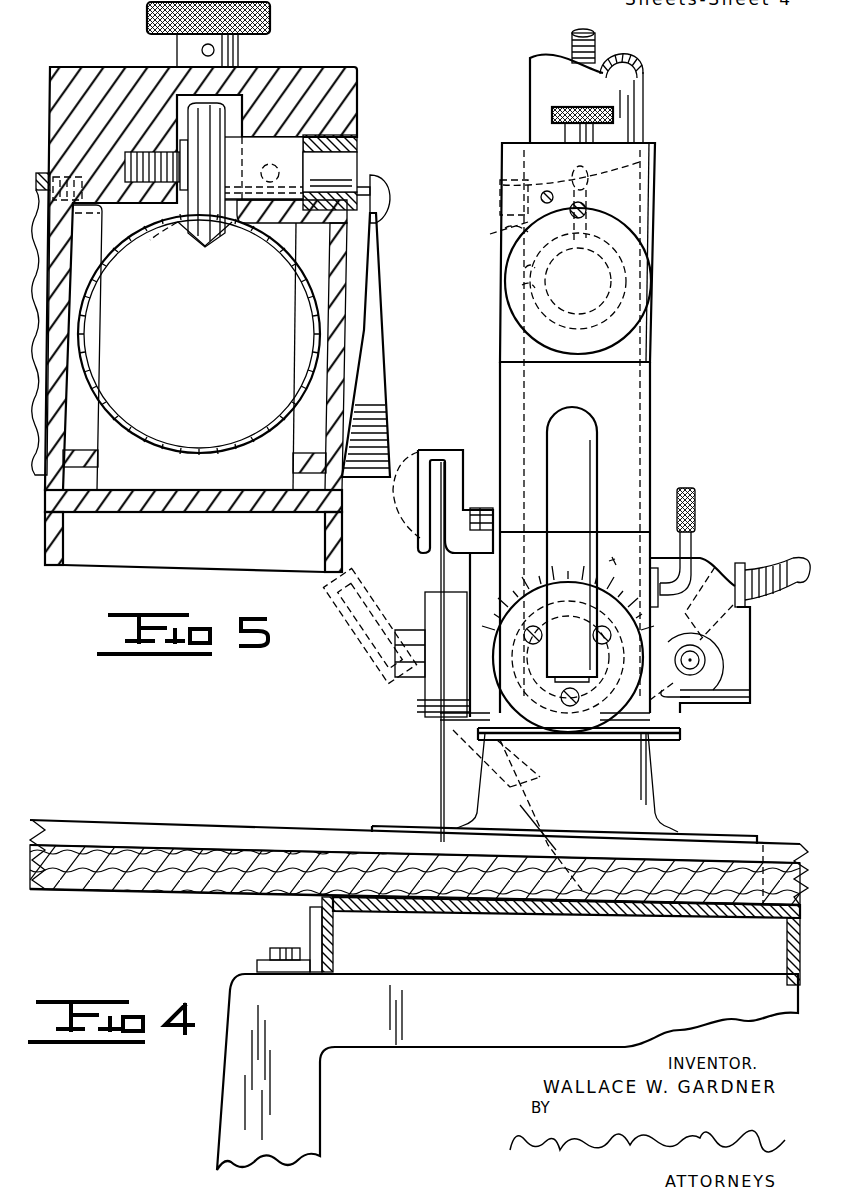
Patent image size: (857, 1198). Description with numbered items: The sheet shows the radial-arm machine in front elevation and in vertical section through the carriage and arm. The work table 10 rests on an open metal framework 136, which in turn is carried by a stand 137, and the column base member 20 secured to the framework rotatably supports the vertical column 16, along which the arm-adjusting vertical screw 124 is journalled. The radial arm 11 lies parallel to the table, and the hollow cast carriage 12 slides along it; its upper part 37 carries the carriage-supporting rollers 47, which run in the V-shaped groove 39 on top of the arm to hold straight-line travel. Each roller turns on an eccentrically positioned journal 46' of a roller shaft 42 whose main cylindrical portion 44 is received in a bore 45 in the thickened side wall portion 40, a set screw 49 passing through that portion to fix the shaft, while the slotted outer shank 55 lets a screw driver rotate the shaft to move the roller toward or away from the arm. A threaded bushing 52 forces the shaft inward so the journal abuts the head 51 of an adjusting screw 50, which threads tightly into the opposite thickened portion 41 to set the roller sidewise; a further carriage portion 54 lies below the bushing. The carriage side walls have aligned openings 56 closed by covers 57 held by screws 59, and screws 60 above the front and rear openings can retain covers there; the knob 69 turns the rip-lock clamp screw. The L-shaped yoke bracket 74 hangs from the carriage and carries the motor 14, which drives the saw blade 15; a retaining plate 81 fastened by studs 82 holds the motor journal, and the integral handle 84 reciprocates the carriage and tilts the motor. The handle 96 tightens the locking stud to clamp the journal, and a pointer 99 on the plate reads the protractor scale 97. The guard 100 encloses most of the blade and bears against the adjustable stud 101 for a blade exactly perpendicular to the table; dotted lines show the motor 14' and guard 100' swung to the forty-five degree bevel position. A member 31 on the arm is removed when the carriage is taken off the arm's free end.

In FIG. 4, the work table 10 is at (266, 818).
In FIG. 5, the radial arm 11 is at (222, 450).
In FIG. 4, the radial arm 11 is at (648, 305).
In FIG. 5, the carriage 12 is at (364, 119).
In FIG. 4, the carriage 12 is at (662, 210).
In FIG. 4, the motor 14 is at (700, 657).
In FIG. 4, the handle 14' is at (677, 527).
In FIG. 4, the saw blade 15 is at (438, 798).
In FIG. 4, the vertical column 16 is at (646, 105).
In FIG. 4, the column base member 20 is at (660, 807).
In FIG. 4, the member 31 is at (560, 300).
In FIG. 5, the upper part of the carriage 37 is at (348, 260).
In FIG. 4, the upper part of the carriage 37 is at (652, 248).
In FIG. 5, the V-shaped groove 39 is at (203, 247).
In FIG. 4, the V-shaped groove 39 is at (578, 281).
In FIG. 5, the thickened side wall portion 40 is at (284, 104).
In FIG. 5, the thickened side wall portion 41 is at (116, 70).
In FIG. 5, the roller shaft 42 is at (233, 210).
In FIG. 4, the roller shaft 42 is at (503, 238).
In FIG. 5, the main cylindrical portion of the roller shaft 44 is at (254, 150).
In FIG. 5, the bore 45 is at (301, 148).
In FIG. 5, the notch 46' is at (159, 246).
In FIG. 5, the carriage-supporting roller 47 is at (190, 240).
In FIG. 4, the carriage-supporting roller 47 is at (656, 160).
In FIG. 5, the set screw 49 is at (269, 182).
In FIG. 4, the set screw 49 is at (547, 191).
In FIG. 5, the adjusting screw 50 is at (128, 206).
In FIG. 5, the screw head 51 is at (178, 205).
In FIG. 5, the threaded bushing 52 is at (359, 143).
In FIG. 4, the threaded bushing 52 is at (505, 190).
In FIG. 5, the lower block 54 is at (318, 218).
In FIG. 5, the outer shank 55 is at (359, 171).
In FIG. 5, the aligned openings 56 is at (98, 445).
In FIG. 5, the covers 57 is at (372, 350).
In FIG. 5, the screws 59 is at (388, 206).
In FIG. 4, the screws 60 is at (589, 208).
In FIG. 5, the knob 69 is at (275, 12).
In FIG. 4, the knob 69 is at (576, 107).
In FIG. 5, the yoke bracket 74 is at (92, 560).
In FIG. 4, the yoke bracket 74 is at (650, 422).
In FIG. 4, the retaining plate 81 is at (598, 740).
In FIG. 4, the studs 82 is at (548, 750).
In FIG. 4, the handle 84 is at (598, 476).
In FIG. 4, the handle 96 is at (705, 546).
In FIG. 4, the protractor scale 97 is at (611, 558).
In FIG. 4, the pointer 99 is at (686, 665).
In FIG. 4, the guard 100 is at (446, 564).
In FIG. 4, the blade clamp alternate position 100' is at (369, 617).
In FIG. 4, the adjustable stud 101 is at (473, 506).
In FIG. 4, the vertical screw 124 is at (572, 42).
In FIG. 4, the open metal framework 136 is at (318, 925).
In FIG. 4, the stand 137 is at (365, 1047).